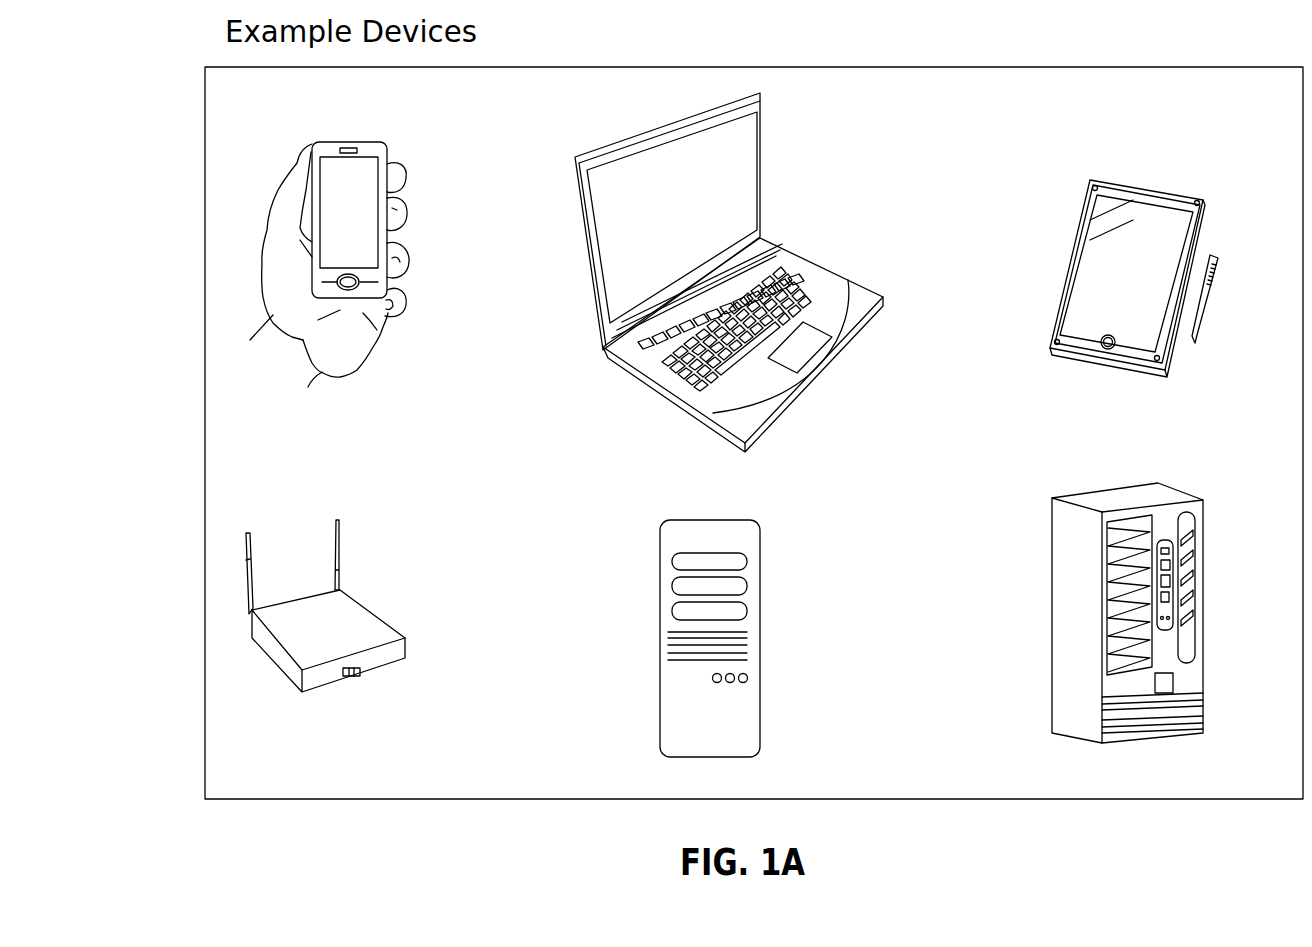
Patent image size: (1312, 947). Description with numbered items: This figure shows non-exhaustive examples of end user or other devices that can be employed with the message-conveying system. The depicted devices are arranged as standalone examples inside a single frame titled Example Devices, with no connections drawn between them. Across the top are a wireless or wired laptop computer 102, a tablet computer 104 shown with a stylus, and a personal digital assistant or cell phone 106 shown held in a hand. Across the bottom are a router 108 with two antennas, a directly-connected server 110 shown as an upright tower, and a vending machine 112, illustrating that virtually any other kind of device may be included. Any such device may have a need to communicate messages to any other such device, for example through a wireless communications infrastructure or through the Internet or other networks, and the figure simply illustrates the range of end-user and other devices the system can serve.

The laptop computer 102 is at (828, 280).
The tablet computer 104 is at (1167, 230).
The personal digital assistant or cell phone 106 is at (342, 168).
The router 108 is at (398, 627).
The directly-connected server 110 is at (738, 713).
The vending machine 112 is at (1193, 677).